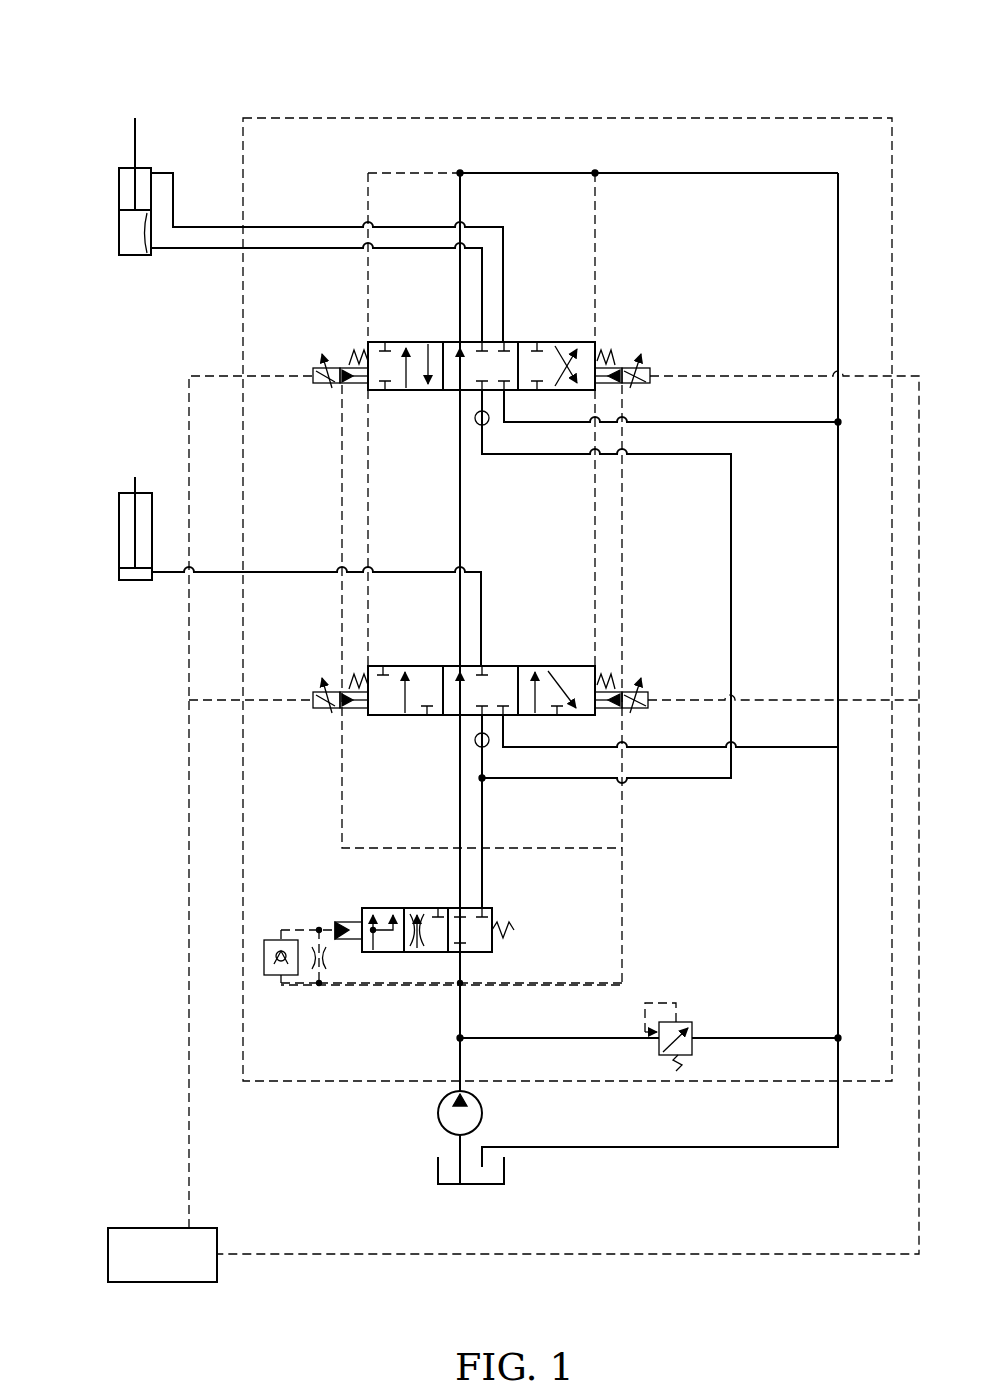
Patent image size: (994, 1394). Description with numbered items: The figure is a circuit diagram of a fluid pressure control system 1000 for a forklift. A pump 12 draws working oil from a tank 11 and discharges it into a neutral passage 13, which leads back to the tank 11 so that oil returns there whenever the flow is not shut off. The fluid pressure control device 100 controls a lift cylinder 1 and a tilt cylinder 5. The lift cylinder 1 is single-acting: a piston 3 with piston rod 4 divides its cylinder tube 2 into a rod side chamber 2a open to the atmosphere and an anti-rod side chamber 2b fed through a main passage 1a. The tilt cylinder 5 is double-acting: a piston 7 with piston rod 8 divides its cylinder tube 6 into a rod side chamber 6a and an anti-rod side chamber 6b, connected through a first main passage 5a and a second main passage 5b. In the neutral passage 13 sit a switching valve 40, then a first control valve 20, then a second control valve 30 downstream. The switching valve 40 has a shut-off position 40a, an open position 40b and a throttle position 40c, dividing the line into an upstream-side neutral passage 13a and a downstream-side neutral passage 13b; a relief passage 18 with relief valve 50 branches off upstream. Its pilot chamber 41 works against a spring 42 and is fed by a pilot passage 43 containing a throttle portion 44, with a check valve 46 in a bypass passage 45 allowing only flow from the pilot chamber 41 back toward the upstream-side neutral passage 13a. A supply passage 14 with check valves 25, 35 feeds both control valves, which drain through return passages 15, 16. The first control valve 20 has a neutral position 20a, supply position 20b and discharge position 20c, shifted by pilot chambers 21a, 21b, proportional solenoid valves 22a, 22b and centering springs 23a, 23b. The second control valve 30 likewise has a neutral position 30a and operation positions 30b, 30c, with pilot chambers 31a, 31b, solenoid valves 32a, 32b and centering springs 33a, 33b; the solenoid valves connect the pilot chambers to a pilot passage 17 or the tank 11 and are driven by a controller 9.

The fluid pressure control system 1000 is at (132, 64).
The fluid pressure control device 100 is at (320, 118).
The lift cylinder 1 is at (120, 488).
The main passage 1a is at (210, 571).
The cylinder tube 2 is at (120, 541).
The rod side chamber 2a is at (125, 507).
The anti-rod side chamber 2b is at (125, 575).
The piston 3 is at (148, 581).
The piston rod 4 is at (138, 490).
The tilt cylinder 5 is at (120, 160).
The first main passage 5a is at (211, 225).
The second main passage 5b is at (215, 251).
The cylinder tube 6 is at (125, 213).
The rod side chamber 6a is at (125, 181).
The anti-rod side chamber 6b is at (125, 251).
The piston 7 is at (148, 257).
The piston rod 8 is at (138, 140).
The controller 9 is at (157, 1255).
The tank 11 is at (438, 1168).
The pump 12 is at (438, 1113).
The neutral passage 13 is at (460, 200).
The upstream-side neutral passage 13a is at (462, 1065).
The downstream-side neutral passage 13b is at (459, 811).
The supply passage 14 is at (733, 553).
The return passage 15 is at (773, 750).
The return passage 16 is at (773, 425).
The pilot passage 17 is at (340, 497).
The relief passage 18 is at (772, 1037).
The first control valve 20 is at (600, 663).
The neutral position 20a is at (507, 666).
The supply position 20b is at (432, 666).
The discharge position 20c is at (582, 666).
The pilot chamber 21a is at (358, 711).
The pilot chamber 21b is at (607, 711).
The solenoid valve 22a is at (322, 704).
The solenoid valve 22b is at (640, 709).
The centering spring 23a is at (353, 674).
The centering spring 23b is at (608, 674).
The check valve 25 is at (475, 740).
The second control valve 30 is at (600, 338).
The neutral position 30a is at (507, 342).
The operation position 30b is at (432, 342).
The operation position 30c is at (582, 342).
The pilot chamber 31a is at (358, 380).
The pilot chamber 31b is at (605, 388).
The solenoid valve 32a is at (322, 380).
The solenoid valve 32b is at (640, 386).
The centering spring 33a is at (353, 350).
The centering spring 33b is at (608, 350).
The check valve 35 is at (475, 418).
The switching valve 40 is at (490, 955).
The shut-off position 40a is at (490, 908).
The open position 40b is at (372, 908).
The throttle position 40c is at (410, 908).
The pilot chamber 41 is at (350, 941).
The spring 42 is at (506, 923).
The pilot passage 43 is at (325, 992).
The throttle portion 44 is at (315, 930).
The bypass passage 45 is at (283, 984).
The check valve 46 is at (272, 940).
The relief valve 50 is at (688, 1022).